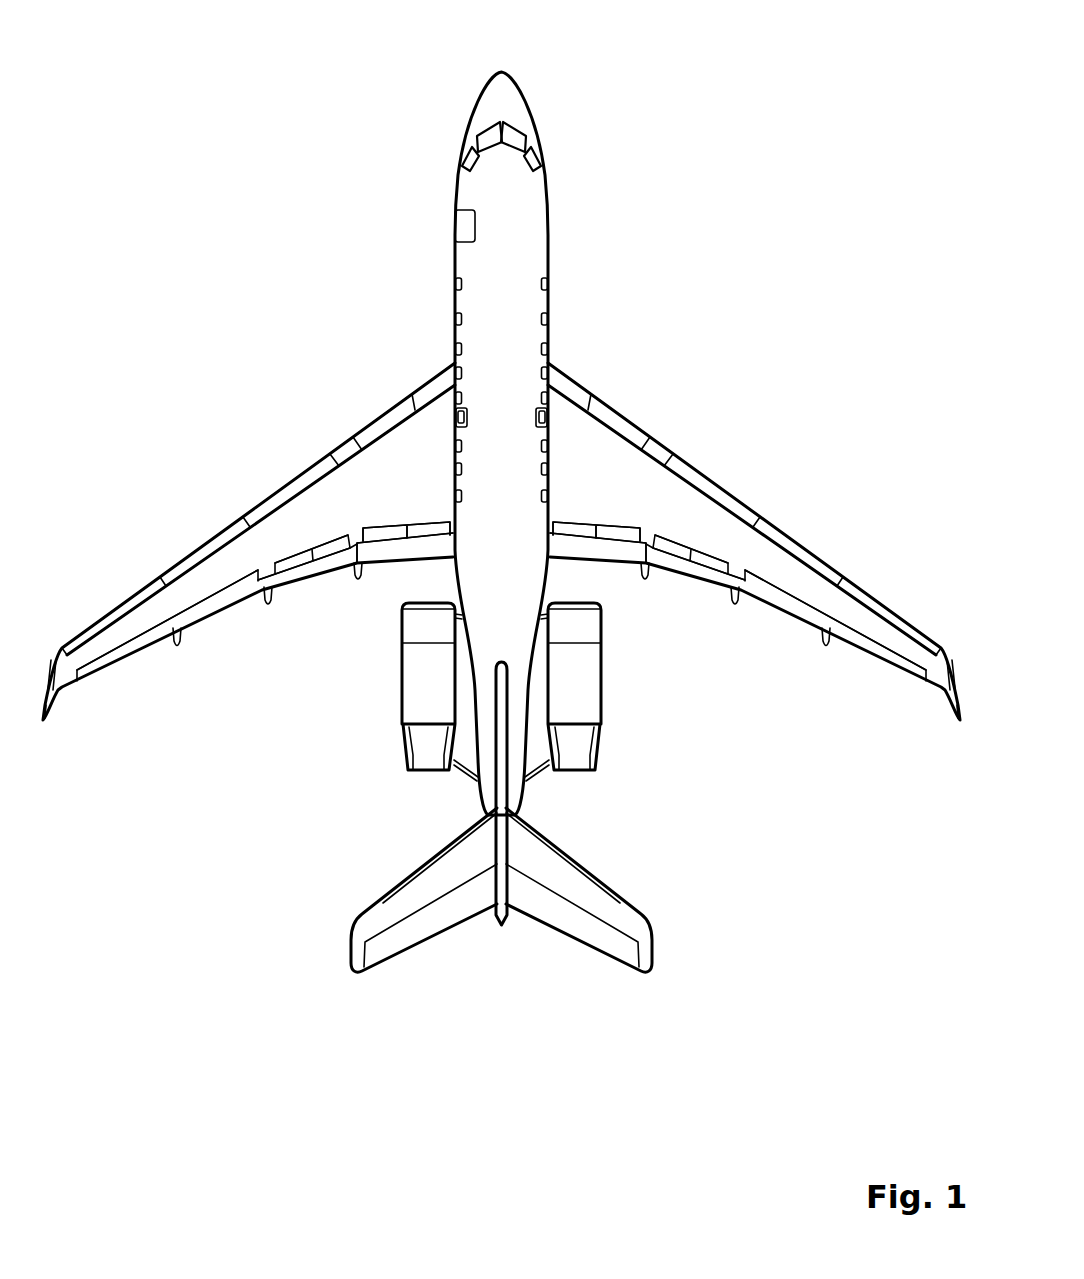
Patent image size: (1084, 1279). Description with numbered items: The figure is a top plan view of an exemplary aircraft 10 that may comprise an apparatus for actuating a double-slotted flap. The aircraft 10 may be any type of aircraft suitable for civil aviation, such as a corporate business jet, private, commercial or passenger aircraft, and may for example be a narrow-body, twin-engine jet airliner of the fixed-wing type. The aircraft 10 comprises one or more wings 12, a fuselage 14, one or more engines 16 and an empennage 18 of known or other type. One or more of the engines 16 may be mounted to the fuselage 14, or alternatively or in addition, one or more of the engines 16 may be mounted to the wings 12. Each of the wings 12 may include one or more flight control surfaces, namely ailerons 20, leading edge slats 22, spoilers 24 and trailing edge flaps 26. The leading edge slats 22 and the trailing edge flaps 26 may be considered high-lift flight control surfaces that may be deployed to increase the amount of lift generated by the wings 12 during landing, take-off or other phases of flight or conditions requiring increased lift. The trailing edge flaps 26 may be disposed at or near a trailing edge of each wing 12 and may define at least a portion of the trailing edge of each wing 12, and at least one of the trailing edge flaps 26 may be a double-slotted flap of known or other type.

The aircraft 10 is at (244, 64).
The wings 12 is at (136, 418).
The fuselage 14 is at (520, 286).
The engines 16 is at (401, 703).
The empennage 18 is at (325, 905).
The ailerons 20 is at (132, 650).
The leading edge slats 22 is at (268, 504).
The spoilers 24 is at (435, 527).
The trailing edge flaps 26 is at (400, 553).